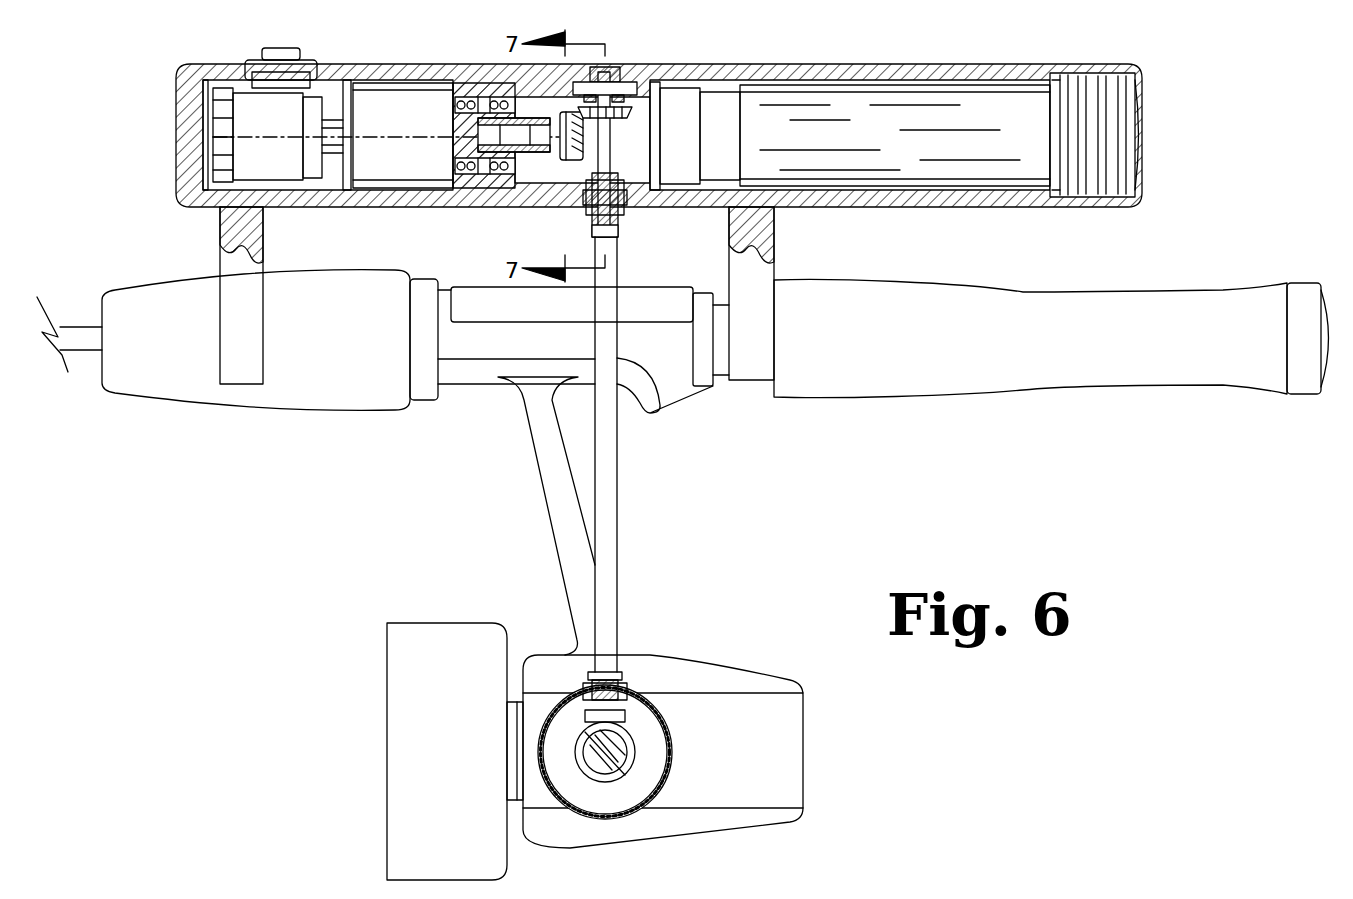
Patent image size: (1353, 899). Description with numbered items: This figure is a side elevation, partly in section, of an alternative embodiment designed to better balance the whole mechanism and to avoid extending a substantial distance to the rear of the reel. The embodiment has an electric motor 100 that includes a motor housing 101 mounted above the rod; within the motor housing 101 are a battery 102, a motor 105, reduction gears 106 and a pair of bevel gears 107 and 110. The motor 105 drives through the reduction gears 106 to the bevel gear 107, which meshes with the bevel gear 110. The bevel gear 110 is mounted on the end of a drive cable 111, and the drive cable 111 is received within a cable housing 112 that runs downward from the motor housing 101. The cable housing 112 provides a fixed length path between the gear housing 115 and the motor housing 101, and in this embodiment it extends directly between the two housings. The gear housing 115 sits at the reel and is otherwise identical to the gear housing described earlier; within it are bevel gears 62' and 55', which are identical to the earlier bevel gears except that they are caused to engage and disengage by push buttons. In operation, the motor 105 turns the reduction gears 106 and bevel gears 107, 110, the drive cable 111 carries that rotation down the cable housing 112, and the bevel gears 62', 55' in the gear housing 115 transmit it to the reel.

The electric motor 100 is at (683, 49).
The motor housing 101 is at (985, 64).
The battery 102 is at (958, 135).
The motor 105 is at (245, 105).
The reduction gears 106 is at (388, 103).
The bevel gear 107 is at (566, 160).
The bevel gear 110 is at (626, 128).
The drive cable 111 is at (612, 215).
The cable housing 112 is at (619, 435).
The bevel gear 62' is at (665, 673).
The bevel gear 55' is at (649, 748).
The gear housing 115 is at (633, 832).